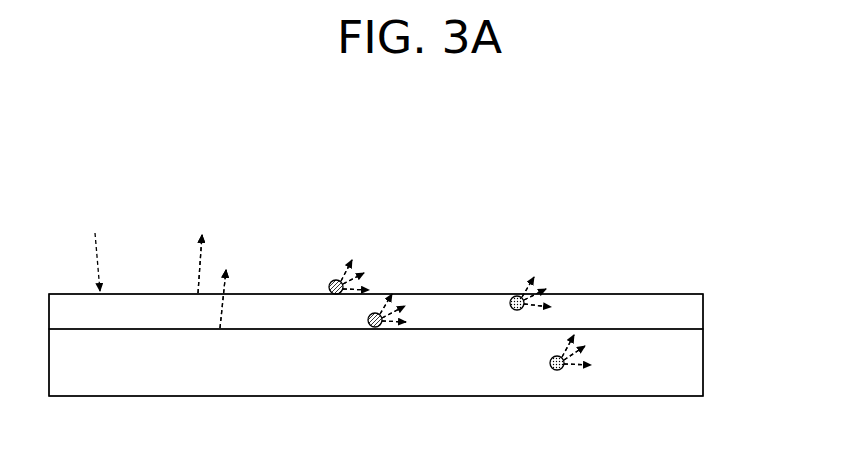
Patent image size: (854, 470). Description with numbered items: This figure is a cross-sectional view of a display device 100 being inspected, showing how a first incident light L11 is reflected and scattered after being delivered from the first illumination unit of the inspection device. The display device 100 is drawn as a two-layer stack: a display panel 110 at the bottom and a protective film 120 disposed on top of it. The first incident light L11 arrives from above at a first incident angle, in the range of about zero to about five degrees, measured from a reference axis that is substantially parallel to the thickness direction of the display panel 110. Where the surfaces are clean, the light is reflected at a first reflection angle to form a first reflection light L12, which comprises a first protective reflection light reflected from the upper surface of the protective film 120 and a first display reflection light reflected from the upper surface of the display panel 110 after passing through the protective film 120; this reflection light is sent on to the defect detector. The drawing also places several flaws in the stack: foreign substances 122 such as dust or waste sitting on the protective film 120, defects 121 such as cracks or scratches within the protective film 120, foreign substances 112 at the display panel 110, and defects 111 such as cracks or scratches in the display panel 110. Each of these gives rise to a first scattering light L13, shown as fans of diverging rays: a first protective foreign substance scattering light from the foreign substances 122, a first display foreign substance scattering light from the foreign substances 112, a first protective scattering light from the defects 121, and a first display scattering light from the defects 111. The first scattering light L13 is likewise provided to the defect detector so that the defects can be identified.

The display device 100 is at (783, 303).
The display panel 110 is at (697, 363).
The protective film 120 is at (697, 313).
The defects 111 is at (557, 371).
The foreign substances 112 is at (375, 328).
The defects 121 is at (515, 296).
The foreign substances 122 is at (335, 280).
The first incident light L11 is at (98, 255).
The first reflection light L12 is at (292, 182).
The first scattering light L13 is at (657, 230).